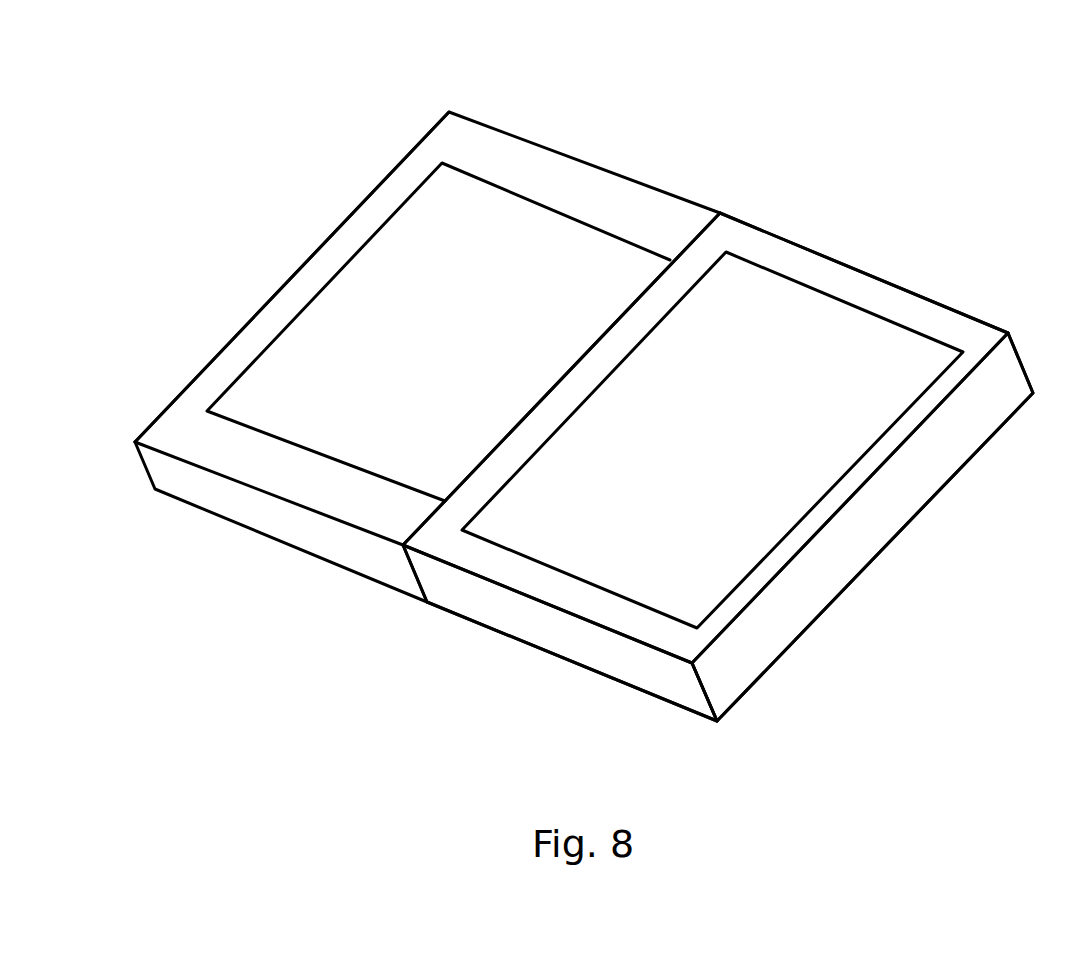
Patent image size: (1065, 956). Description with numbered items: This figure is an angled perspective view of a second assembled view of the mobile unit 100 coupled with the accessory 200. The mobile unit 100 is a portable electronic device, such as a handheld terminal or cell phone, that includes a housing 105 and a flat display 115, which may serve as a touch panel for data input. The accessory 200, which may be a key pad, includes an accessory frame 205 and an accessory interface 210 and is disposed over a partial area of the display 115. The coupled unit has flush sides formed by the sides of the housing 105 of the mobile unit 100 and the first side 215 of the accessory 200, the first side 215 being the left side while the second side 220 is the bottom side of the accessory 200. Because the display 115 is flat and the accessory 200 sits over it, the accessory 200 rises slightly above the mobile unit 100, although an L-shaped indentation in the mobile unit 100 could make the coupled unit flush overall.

The mobile unit 100 is at (504, 93).
The housing 105 is at (248, 323).
The display 115 is at (418, 254).
The accessory 200 is at (978, 295).
The accessory frame 205 is at (775, 237).
The accessory interface 210 is at (713, 562).
The first side 215 is at (520, 617).
The second side 220 is at (750, 668).